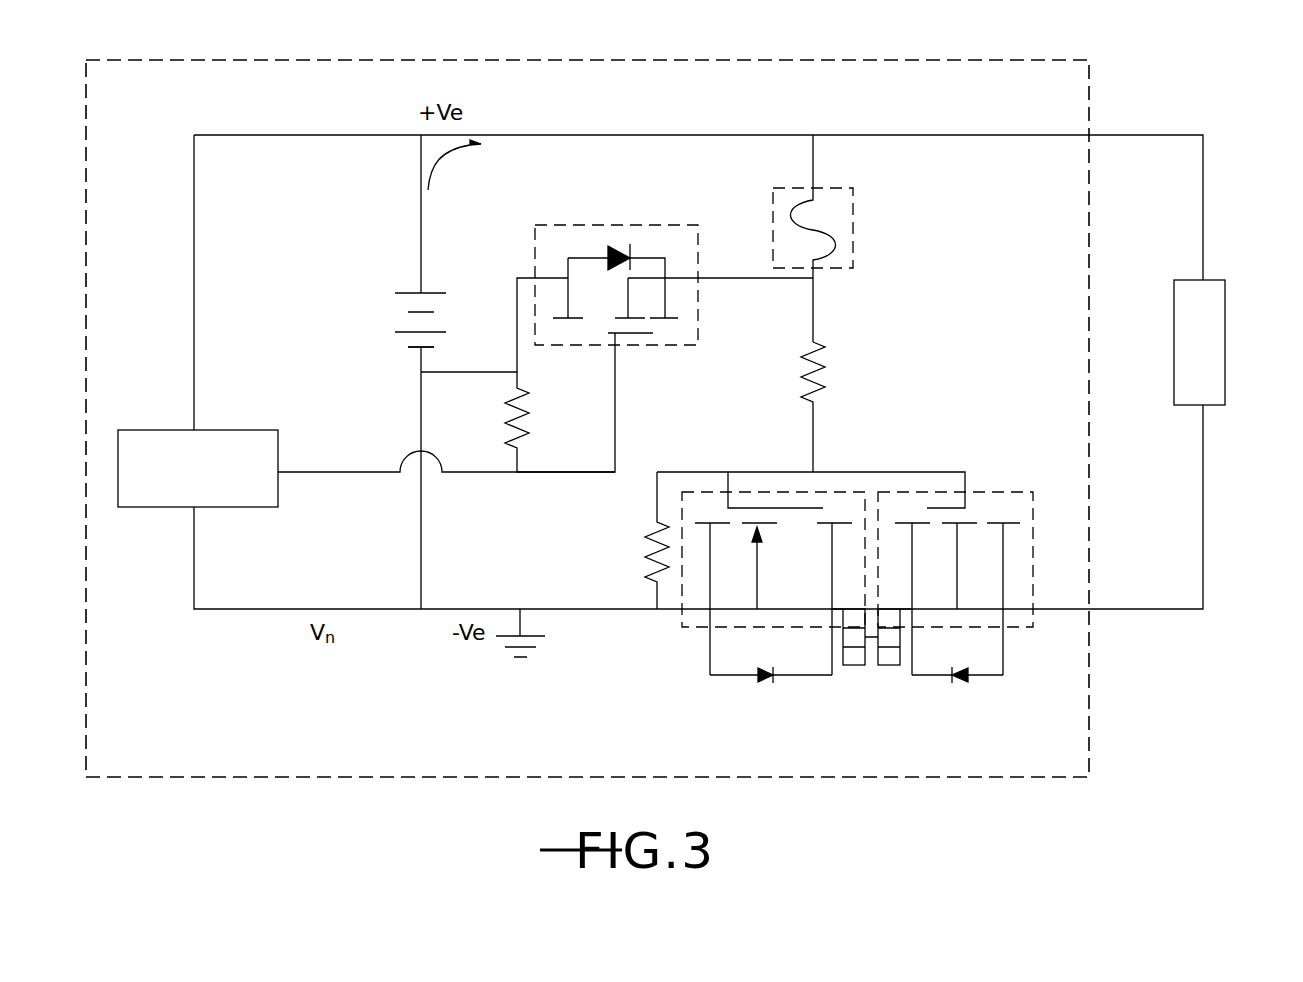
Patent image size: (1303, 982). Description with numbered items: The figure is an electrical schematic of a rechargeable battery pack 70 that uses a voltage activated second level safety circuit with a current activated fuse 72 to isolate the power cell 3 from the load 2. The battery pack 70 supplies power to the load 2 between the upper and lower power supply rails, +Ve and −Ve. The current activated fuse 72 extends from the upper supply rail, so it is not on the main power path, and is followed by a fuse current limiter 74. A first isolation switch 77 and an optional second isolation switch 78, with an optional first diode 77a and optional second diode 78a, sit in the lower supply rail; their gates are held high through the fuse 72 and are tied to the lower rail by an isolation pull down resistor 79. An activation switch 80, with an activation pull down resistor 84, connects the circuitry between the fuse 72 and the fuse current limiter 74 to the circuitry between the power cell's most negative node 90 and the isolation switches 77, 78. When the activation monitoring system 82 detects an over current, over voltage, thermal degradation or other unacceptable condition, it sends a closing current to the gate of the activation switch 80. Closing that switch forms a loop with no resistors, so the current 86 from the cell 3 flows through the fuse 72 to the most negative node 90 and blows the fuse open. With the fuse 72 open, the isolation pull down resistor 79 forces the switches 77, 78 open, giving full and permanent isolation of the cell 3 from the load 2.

The rechargeable battery pack 70 is at (862, 60).
The current 86 is at (440, 158).
The power cell 3 is at (390, 318).
The most negative node of the power cell 90 is at (420, 357).
The activation switch 80 is at (610, 225).
The current activated fuse 72 is at (855, 207).
The fuse current limiter 74 is at (825, 378).
The activation pull down resistor 84 is at (536, 414).
The first isolation switch 77 is at (774, 490).
The first diode 77a is at (733, 678).
The second isolation switch 78 is at (977, 490).
The second diode 78a is at (983, 677).
The isolation pull down resistor 79 is at (652, 556).
The activation monitoring system 82 is at (165, 428).
The load 2 is at (1225, 313).